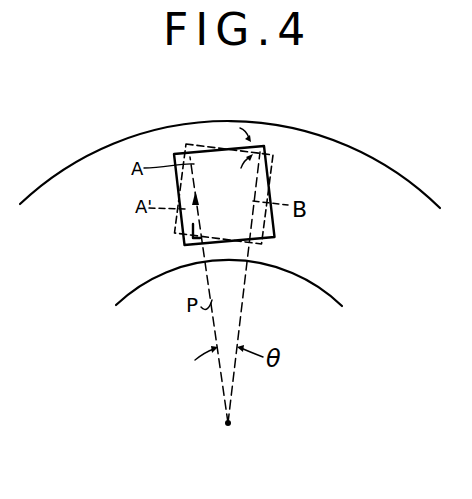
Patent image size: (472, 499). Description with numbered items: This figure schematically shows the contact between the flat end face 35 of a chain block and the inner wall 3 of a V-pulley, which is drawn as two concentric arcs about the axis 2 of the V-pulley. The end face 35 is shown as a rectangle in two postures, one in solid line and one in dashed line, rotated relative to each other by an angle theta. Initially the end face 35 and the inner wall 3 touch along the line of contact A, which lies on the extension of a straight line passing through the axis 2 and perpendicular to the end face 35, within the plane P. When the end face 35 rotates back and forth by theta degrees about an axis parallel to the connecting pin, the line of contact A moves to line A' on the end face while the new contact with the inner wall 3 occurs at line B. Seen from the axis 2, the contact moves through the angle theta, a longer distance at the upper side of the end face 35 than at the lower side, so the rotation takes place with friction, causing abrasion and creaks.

The axis of the V-pulley 2 is at (230, 427).
The inner wall of the V-pulley 3 is at (323, 152).
The end face of the block 35 is at (212, 164).